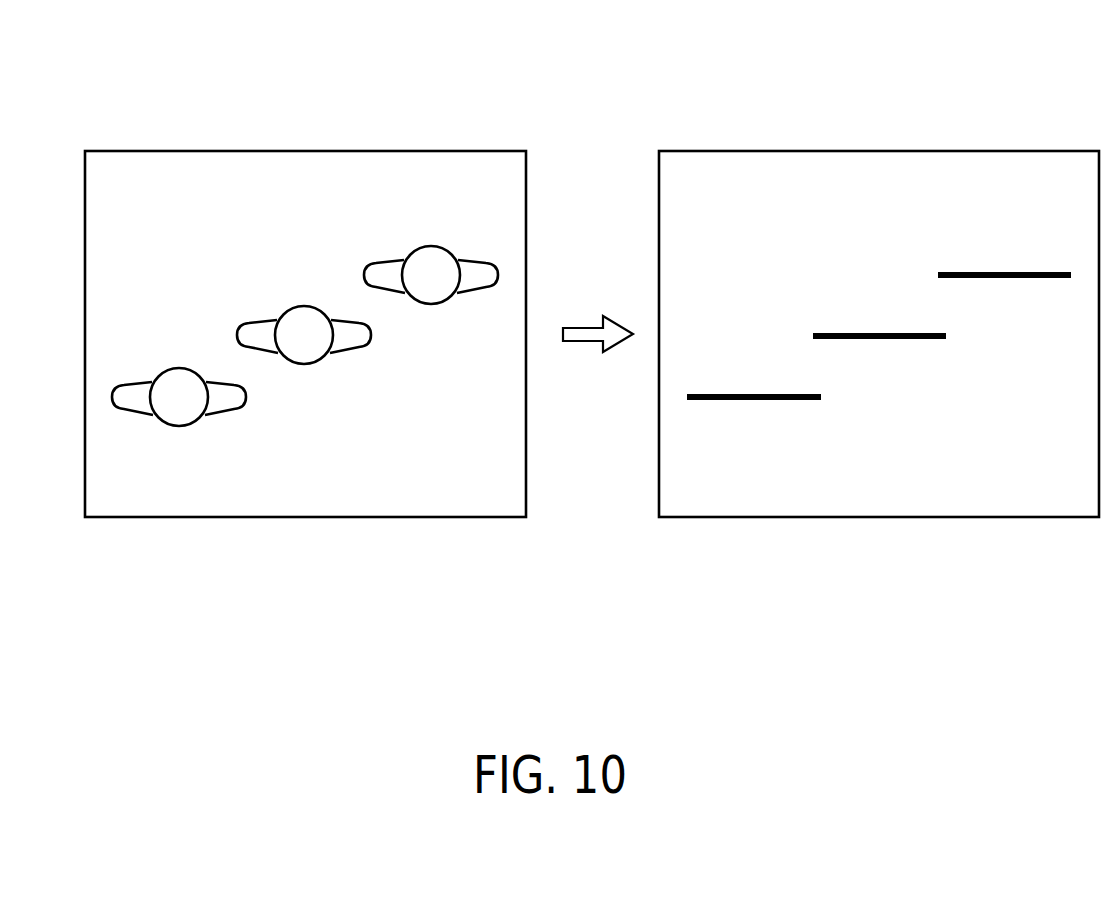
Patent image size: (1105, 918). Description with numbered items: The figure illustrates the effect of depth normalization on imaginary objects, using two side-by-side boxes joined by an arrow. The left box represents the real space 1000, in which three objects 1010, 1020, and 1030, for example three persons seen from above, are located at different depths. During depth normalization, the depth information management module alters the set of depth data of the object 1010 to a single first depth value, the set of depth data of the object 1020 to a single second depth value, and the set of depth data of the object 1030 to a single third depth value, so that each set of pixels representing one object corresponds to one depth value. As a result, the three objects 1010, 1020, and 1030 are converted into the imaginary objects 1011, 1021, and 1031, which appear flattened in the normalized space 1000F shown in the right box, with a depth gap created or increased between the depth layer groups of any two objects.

The real space 1000 is at (306, 150).
The normalized space 1000F is at (880, 150).
The object 1010 is at (179, 367).
The object 1020 is at (304, 305).
The object 1030 is at (431, 245).
The imaginary object 1011 is at (756, 394).
The imaginary object 1021 is at (881, 333).
The imaginary object 1031 is at (1006, 272).